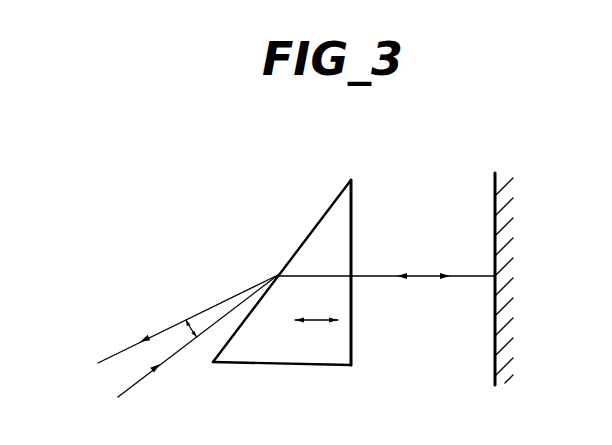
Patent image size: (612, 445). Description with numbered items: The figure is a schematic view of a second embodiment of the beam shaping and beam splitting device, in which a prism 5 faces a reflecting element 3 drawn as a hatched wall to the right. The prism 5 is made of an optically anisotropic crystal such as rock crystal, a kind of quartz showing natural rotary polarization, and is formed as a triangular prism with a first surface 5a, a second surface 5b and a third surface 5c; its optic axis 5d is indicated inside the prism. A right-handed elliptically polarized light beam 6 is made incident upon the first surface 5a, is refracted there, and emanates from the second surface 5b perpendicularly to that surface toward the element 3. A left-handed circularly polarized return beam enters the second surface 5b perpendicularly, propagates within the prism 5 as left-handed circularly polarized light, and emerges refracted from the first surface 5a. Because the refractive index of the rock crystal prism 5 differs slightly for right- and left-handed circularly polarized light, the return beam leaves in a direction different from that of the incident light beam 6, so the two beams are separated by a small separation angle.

The reflecting wall / mirror surface 3 is at (495, 203).
The prism 5 is at (307, 299).
The first surface 5a is at (313, 230).
The second surface 5b is at (352, 228).
The third surface 5c is at (267, 366).
The optic axis 5d is at (317, 317).
The light beam 6 is at (140, 380).